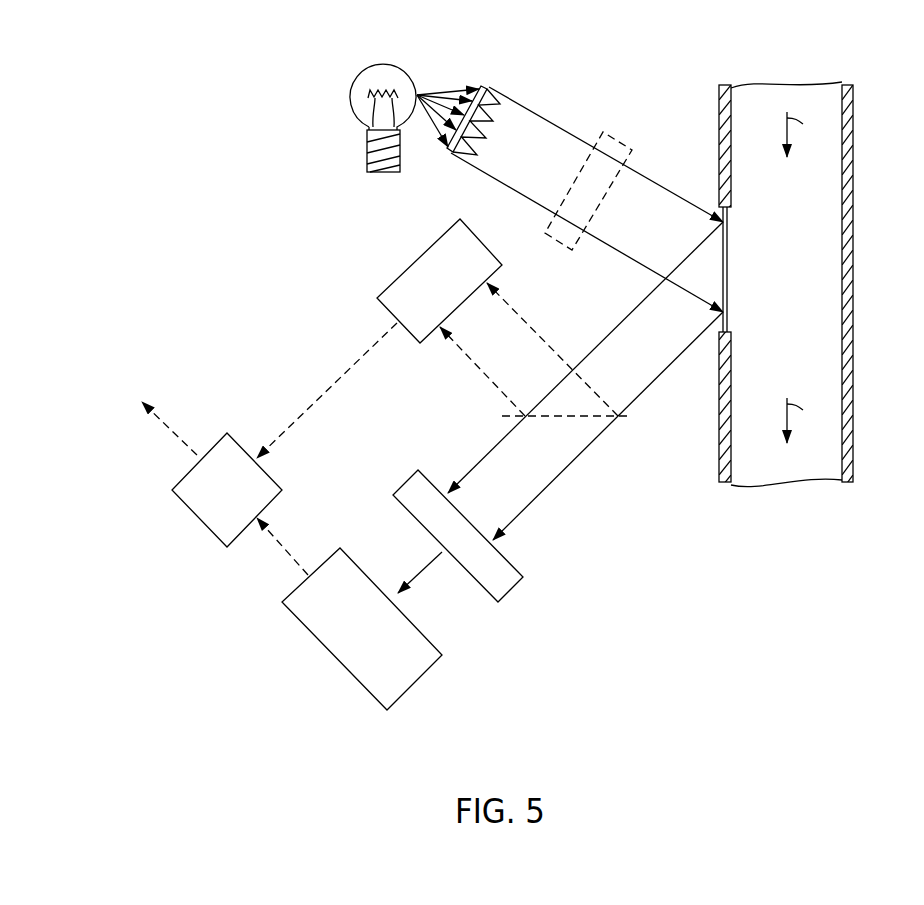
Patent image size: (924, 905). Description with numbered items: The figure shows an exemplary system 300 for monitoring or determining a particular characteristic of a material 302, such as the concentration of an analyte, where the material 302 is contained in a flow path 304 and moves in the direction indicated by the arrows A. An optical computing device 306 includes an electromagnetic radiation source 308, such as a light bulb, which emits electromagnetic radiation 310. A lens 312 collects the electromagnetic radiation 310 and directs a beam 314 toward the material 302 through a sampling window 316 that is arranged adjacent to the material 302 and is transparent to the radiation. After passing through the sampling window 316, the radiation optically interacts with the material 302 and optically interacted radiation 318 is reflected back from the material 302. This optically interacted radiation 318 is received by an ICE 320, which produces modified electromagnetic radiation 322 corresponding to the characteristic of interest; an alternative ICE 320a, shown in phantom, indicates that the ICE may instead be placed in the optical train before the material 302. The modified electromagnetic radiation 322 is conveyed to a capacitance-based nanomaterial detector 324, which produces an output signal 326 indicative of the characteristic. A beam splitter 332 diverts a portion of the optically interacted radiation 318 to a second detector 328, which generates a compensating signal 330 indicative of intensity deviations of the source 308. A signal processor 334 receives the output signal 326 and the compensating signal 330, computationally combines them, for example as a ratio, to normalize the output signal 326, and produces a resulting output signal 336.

The system 300 is at (682, 93).
The material 302 is at (806, 288).
The flow path 304 is at (855, 135).
The optical computing device 306 is at (275, 245).
The electromagnetic radiation source 308 is at (350, 80).
The electromagnetic radiation 310 is at (448, 88).
The lens 312 is at (488, 88).
The beam 314 is at (563, 137).
The sampling window 316 is at (728, 215).
The optically interacted radiation 318 is at (527, 505).
The ICE 320 is at (508, 583).
The ICE 320a is at (558, 243).
The modified electromagnetic radiation 322 is at (422, 573).
The capacitance-based nanomaterial detector 324 is at (430, 658).
The output signal 326 is at (285, 550).
The second detector 328 is at (435, 252).
The compensating signal 330 is at (325, 392).
The beam splitter 332 is at (545, 418).
The signal processor 334 is at (190, 508).
The resulting output signal 336 is at (172, 435).